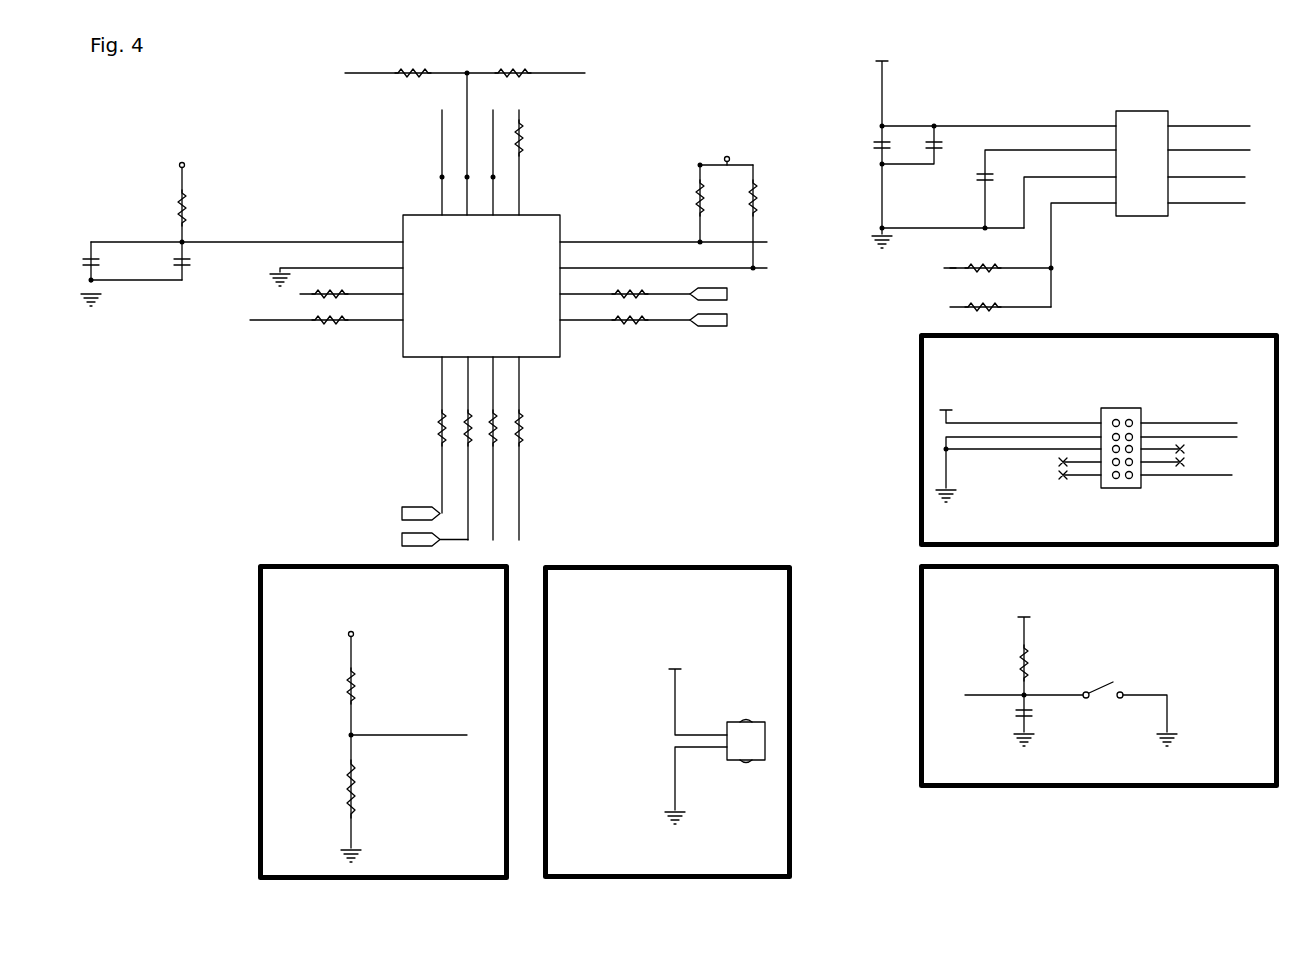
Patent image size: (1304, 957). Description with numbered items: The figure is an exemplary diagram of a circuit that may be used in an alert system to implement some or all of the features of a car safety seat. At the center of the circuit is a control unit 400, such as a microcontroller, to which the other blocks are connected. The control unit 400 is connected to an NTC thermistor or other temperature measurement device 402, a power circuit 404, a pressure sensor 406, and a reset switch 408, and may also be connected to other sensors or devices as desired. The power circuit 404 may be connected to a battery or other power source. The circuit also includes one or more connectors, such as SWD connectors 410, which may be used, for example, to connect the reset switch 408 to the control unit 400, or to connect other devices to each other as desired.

The control unit 400 is at (386, 207).
The temperature measurement device 402 is at (382, 710).
The power circuit 404 is at (666, 709).
The pressure sensor 406 is at (1031, 178).
The reset switch 408 is at (1073, 676).
The SWD connectors 410 is at (1073, 440).